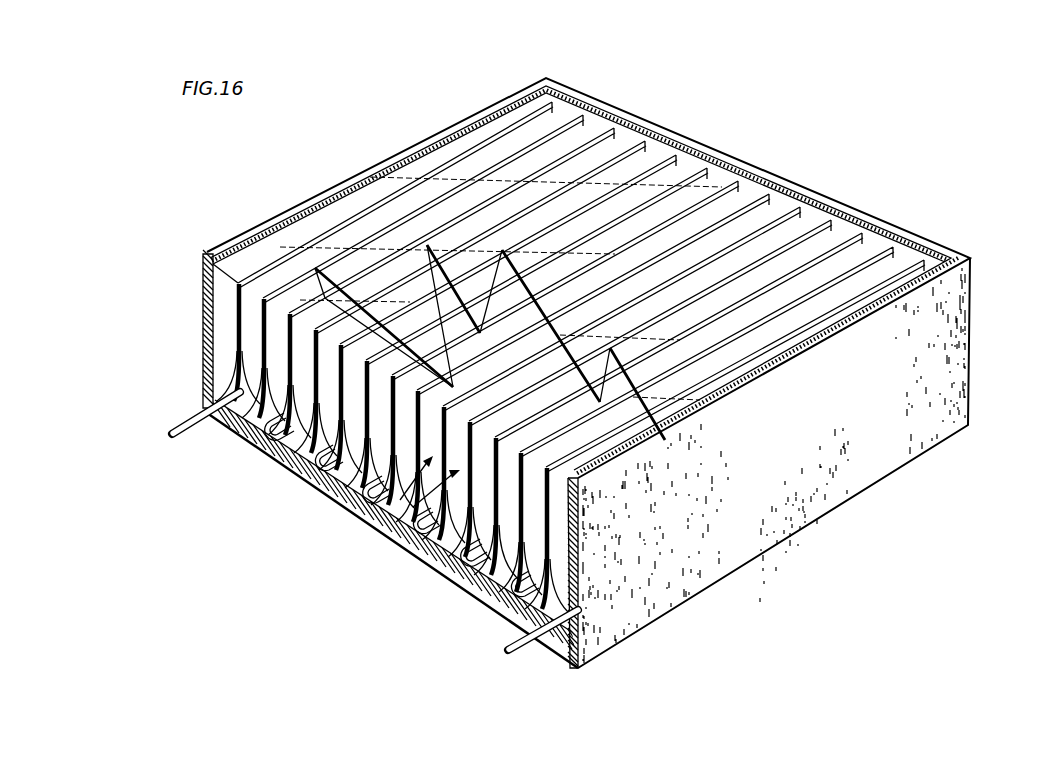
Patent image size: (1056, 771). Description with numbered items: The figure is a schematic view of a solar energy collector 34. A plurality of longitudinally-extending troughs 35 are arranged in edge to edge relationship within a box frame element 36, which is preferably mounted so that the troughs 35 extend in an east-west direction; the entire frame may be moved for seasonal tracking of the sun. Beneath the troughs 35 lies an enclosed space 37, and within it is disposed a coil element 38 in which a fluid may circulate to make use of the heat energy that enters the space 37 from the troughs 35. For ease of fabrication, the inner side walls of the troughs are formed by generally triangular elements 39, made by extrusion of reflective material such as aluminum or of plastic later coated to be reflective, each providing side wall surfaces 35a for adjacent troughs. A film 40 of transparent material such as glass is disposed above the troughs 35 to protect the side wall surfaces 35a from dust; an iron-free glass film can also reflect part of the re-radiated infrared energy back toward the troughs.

The solar energy collector 34 is at (993, 270).
The troughs 35 is at (550, 500).
The side wall surfaces 35a is at (417, 547).
The box frame element 36 is at (682, 559).
The enclosed space 37 is at (327, 507).
The coil element 38 is at (176, 427).
The generally triangular elements 39 is at (478, 598).
The film 40 is at (262, 258).